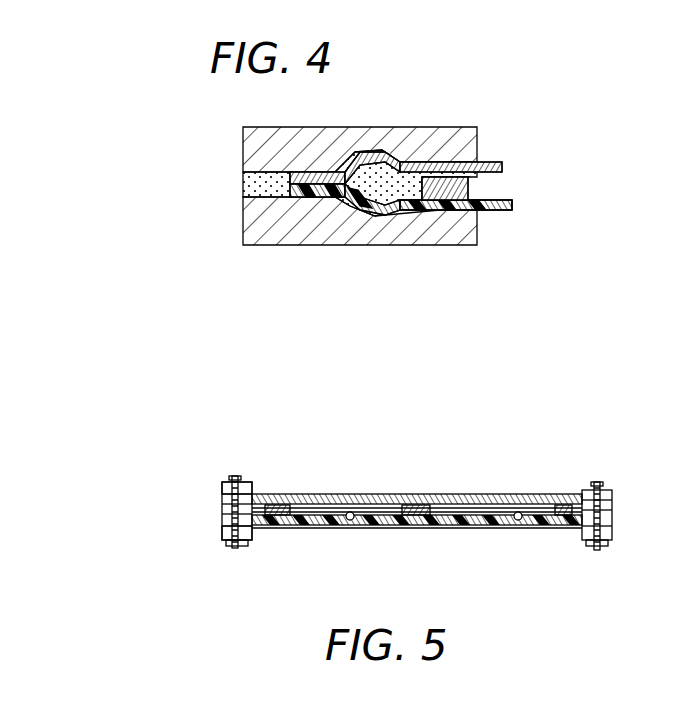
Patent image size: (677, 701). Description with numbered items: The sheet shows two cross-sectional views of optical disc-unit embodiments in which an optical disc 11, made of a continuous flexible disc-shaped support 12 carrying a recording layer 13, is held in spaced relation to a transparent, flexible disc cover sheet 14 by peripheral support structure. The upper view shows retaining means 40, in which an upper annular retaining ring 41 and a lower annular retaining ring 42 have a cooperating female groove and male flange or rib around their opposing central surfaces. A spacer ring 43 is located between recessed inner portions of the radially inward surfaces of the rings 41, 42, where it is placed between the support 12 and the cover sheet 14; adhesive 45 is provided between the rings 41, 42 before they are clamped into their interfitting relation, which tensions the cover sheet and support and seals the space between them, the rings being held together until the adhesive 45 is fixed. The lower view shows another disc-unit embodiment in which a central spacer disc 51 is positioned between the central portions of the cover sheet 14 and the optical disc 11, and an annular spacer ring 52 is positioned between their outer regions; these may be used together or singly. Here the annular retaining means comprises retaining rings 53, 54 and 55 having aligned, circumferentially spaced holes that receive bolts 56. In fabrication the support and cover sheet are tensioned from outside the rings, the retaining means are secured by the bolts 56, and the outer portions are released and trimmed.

In FIG. 4, the optical disc 11 is at (522, 206).
In FIG. 5, the optical disc 11 is at (428, 528).
In FIG. 4, the support 12 is at (495, 212).
In FIG. 5, the support 12 is at (478, 527).
In FIG. 4, the recording layer 13 is at (500, 203).
In FIG. 5, the recording layer 13 is at (350, 522).
In FIG. 4, the disc cover sheet 14 is at (495, 163).
In FIG. 5, the disc cover sheet 14 is at (515, 494).
In FIG. 4, the retaining means 40 is at (196, 124).
In FIG. 4, the upper annular retaining ring 41 is at (383, 130).
In FIG. 4, the lower annular retaining ring 42 is at (328, 237).
In FIG. 4, the spacer ring 43 is at (470, 186).
In FIG. 4, the adhesive 45 is at (243, 186).
In FIG. 5, the central spacer disc 51 is at (418, 505).
In FIG. 5, the annular spacer ring 52 is at (285, 507).
In FIG. 5, the retaining ring 53 is at (255, 492).
In FIG. 5, the retaining ring 54 is at (220, 513).
In FIG. 5, the retaining ring 55 is at (253, 532).
In FIG. 5, the bolts 56 is at (236, 476).